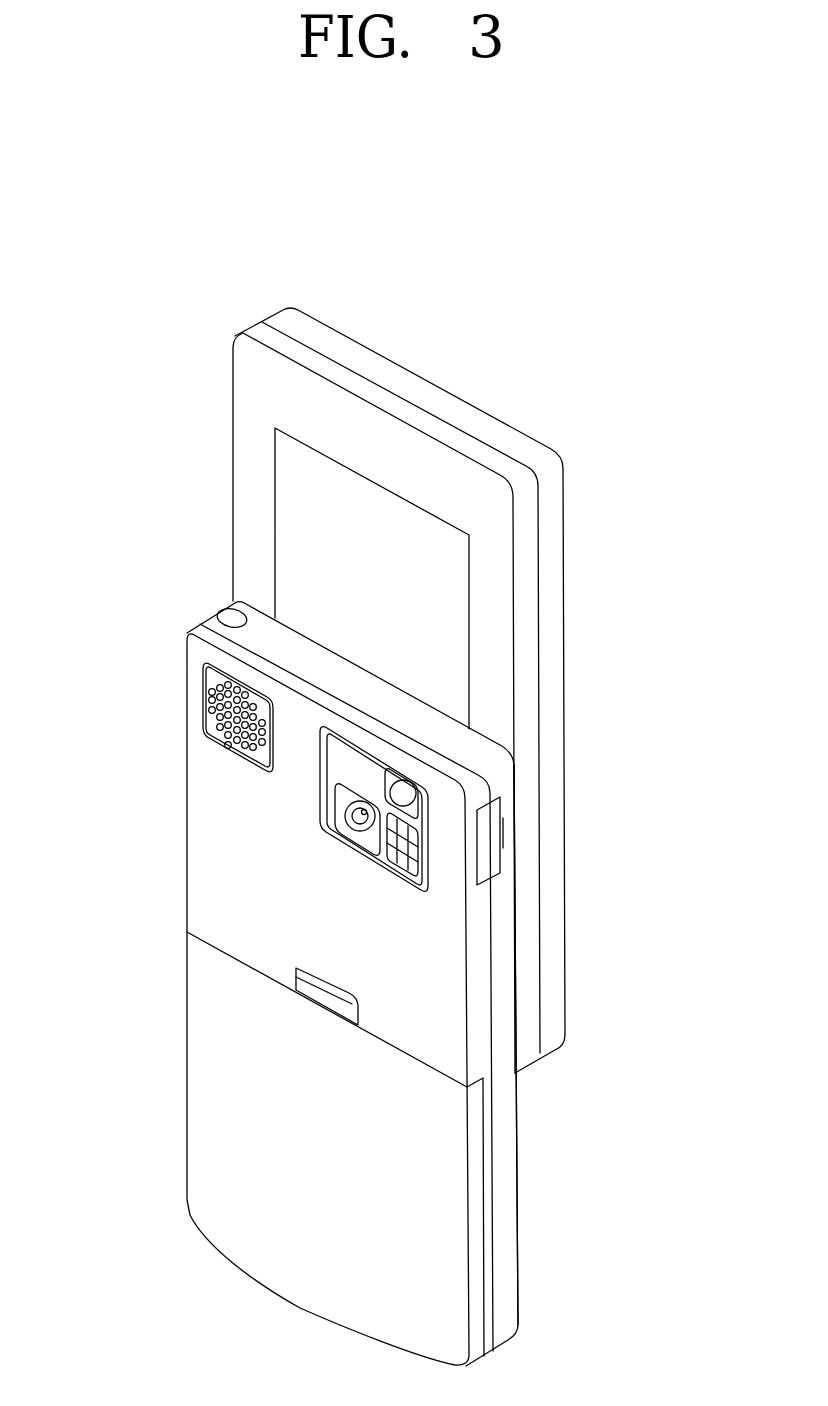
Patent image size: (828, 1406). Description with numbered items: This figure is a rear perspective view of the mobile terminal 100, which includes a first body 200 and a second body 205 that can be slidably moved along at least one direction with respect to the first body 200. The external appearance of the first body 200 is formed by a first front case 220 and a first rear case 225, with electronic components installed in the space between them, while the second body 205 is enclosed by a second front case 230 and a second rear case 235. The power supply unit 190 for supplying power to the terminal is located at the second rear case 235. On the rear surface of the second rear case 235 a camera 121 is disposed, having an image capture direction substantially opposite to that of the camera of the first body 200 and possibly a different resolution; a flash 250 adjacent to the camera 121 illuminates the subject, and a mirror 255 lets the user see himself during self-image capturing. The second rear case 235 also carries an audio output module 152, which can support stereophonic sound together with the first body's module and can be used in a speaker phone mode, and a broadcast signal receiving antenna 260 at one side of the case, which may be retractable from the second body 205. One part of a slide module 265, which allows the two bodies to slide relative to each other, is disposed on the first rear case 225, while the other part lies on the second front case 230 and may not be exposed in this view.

The mobile terminal 100 is at (577, 373).
The first body 200 is at (203, 422).
The second body 205 is at (163, 828).
The first front case 220 is at (282, 317).
The first rear case 225 is at (263, 332).
The slide module 265 is at (285, 527).
The broadcast signal receiving antenna 260 is at (227, 615).
The audio output module 152 is at (213, 710).
The flash 250 is at (430, 880).
The camera 121 is at (362, 822).
The mirror 255 is at (403, 790).
The second rear case 235 is at (480, 1037).
The second front case 230 is at (507, 1105).
The power supply unit 190 is at (205, 1032).